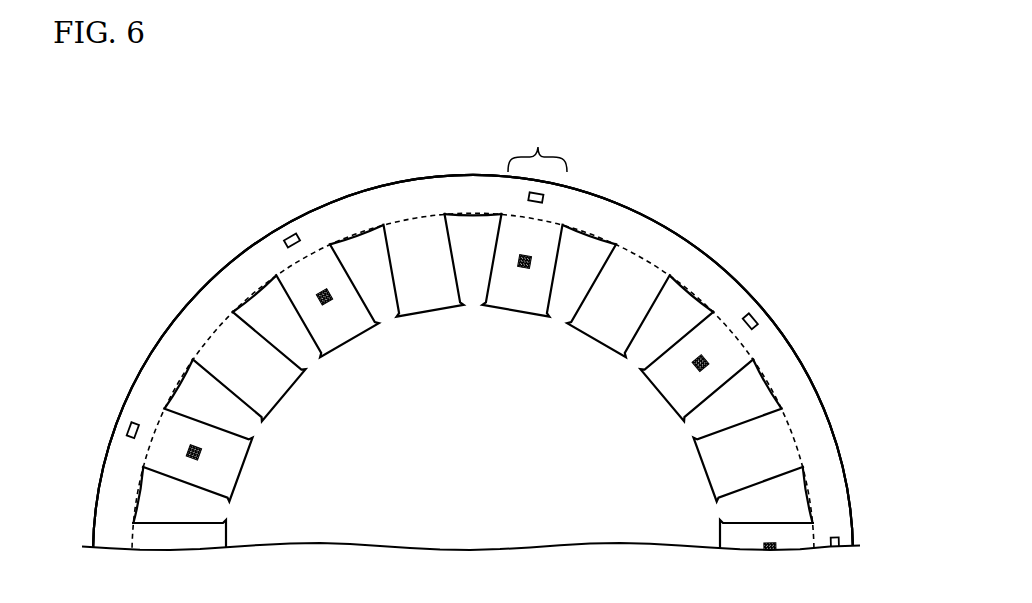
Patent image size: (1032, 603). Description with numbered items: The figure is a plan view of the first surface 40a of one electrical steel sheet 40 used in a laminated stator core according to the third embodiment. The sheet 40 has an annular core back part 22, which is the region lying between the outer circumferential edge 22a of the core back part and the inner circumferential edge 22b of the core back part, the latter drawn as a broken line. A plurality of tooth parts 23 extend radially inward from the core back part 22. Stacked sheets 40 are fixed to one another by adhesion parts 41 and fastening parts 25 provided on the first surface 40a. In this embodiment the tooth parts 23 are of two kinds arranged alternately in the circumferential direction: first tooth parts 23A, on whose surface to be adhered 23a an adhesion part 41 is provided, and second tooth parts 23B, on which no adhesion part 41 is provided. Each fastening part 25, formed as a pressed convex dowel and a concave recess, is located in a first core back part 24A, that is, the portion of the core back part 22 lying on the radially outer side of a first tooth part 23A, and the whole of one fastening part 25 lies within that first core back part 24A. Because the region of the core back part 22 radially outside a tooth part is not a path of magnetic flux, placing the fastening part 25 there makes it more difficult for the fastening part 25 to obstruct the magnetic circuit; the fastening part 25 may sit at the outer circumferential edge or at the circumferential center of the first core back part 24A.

The core back part 22 is at (451, 327).
The outer circumferential edge of the core back part 22a is at (153, 350).
The inner circumferential edge of the core back part 22b is at (221, 322).
The tooth part 23 is at (473, 369).
The surface to be adhered of the tooth part 23a is at (545, 240).
The first tooth part 23A is at (608, 287).
The second tooth part 23B is at (426, 310).
The first core back part 24A is at (537, 141).
The fastening part 25 is at (543, 199).
The electrical steel sheet 40 is at (347, 188).
The first surface of the electrical steel sheet 40a is at (152, 387).
The adhesion part 41 is at (519, 270).